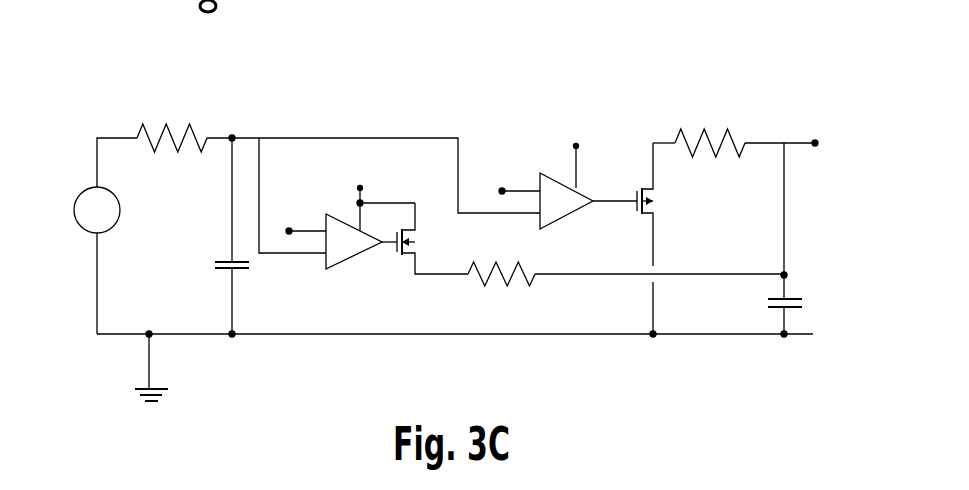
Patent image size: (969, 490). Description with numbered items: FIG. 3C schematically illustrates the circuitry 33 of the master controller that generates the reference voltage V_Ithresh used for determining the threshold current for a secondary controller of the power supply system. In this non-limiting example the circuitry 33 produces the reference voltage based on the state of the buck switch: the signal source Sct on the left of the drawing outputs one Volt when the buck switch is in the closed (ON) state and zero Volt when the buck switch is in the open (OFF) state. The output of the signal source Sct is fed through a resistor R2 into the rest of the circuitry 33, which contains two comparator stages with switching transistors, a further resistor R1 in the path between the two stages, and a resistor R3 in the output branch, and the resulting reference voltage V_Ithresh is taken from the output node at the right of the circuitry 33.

The circuitry 33 is at (502, 60).
The resistor R1 is at (501, 263).
The resistor R2 is at (172, 126).
The resistor R3 is at (710, 133).
The signal source Sct is at (97, 210).